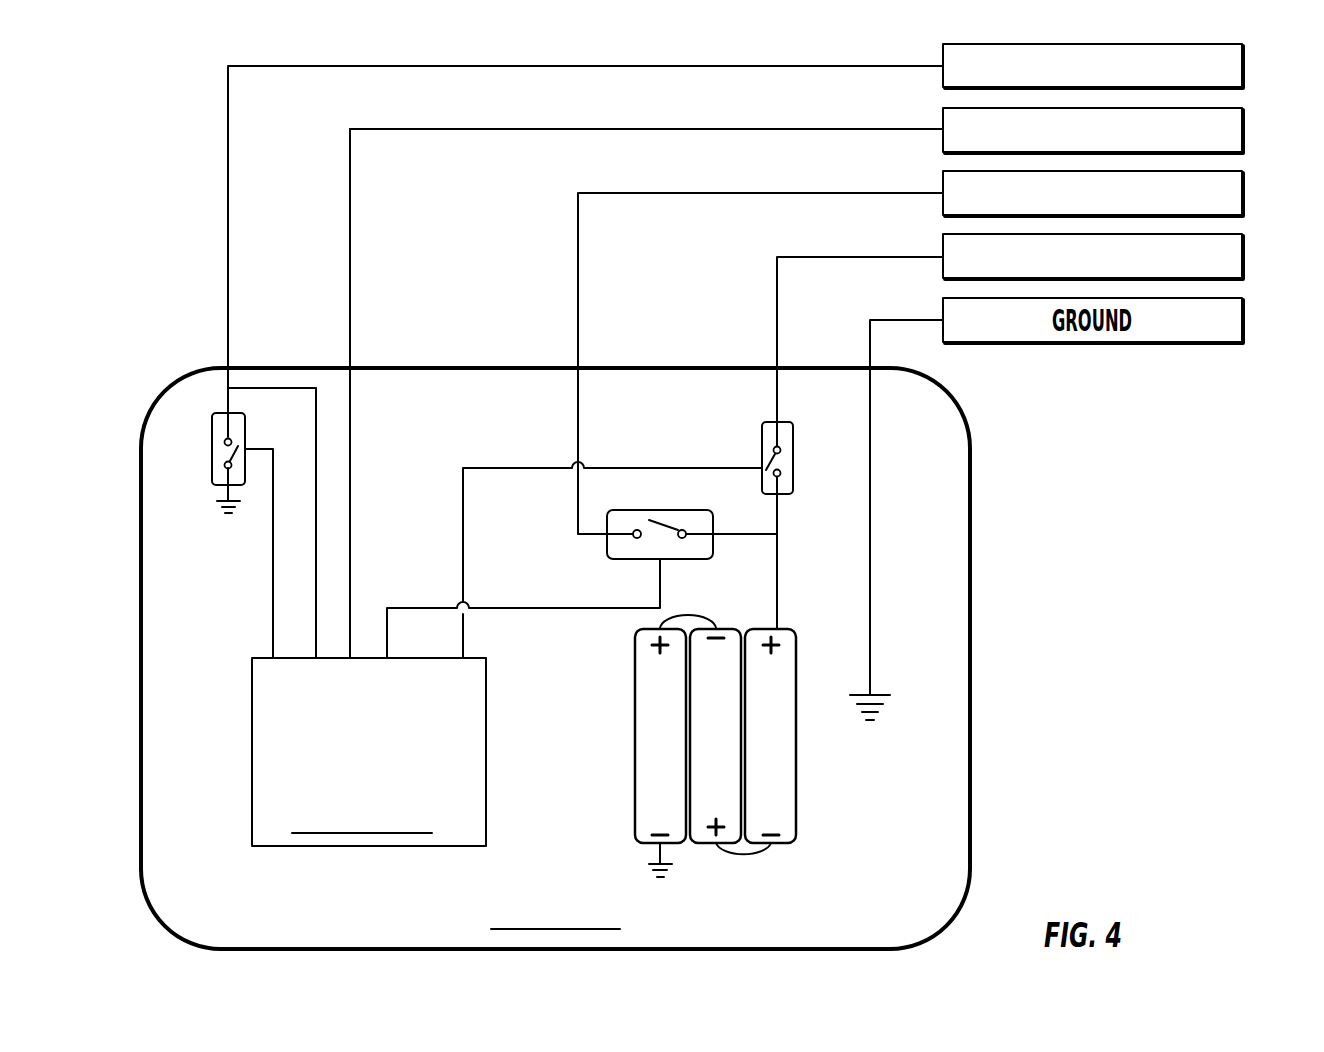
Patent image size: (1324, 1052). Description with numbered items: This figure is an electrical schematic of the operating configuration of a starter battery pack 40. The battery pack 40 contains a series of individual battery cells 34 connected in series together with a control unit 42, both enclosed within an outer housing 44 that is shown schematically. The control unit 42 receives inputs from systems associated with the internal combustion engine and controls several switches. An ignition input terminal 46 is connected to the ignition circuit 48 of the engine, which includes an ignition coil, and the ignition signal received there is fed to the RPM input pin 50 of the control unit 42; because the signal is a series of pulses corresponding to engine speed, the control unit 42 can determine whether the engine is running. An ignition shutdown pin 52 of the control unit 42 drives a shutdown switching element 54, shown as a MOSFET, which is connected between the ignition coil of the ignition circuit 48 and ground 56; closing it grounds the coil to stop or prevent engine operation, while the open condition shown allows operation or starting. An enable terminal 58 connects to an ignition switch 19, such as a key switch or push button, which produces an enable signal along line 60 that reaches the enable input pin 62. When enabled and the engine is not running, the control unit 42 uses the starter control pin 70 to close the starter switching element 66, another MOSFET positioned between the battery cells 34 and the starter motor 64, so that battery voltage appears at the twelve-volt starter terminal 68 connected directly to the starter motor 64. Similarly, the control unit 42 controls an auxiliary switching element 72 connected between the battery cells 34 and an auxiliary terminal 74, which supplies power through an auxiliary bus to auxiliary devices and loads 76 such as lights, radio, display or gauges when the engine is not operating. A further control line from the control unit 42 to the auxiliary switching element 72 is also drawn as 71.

The ignition switch 19 is at (1242, 134).
The battery cells 34 is at (782, 810).
The battery pack 40 is at (1022, 645).
The control unit 42 is at (363, 847).
The outer housing 44 is at (971, 521).
The ignition input terminal 46 is at (228, 327).
The ignition circuit 48 is at (1242, 72).
The RPM input pin 50 is at (316, 637).
The ignition shutdown pin 52 is at (272, 637).
The shutdown switching element 54 is at (212, 413).
The ground 56 is at (220, 503).
The enable terminal 58 is at (351, 337).
The line 60 is at (515, 130).
The enable input pin 62 is at (352, 575).
The starter motor 64 is at (1242, 198).
The starter switching element 66 is at (607, 545).
The 12-volt starter terminal 68 is at (578, 337).
The starter control pin 70 is at (389, 627).
The aux control line 71 is at (462, 623).
The auxiliary switching element 72 is at (760, 447).
The auxiliary terminal 74 is at (777, 347).
The auxiliary devices and loads 76 is at (1242, 262).